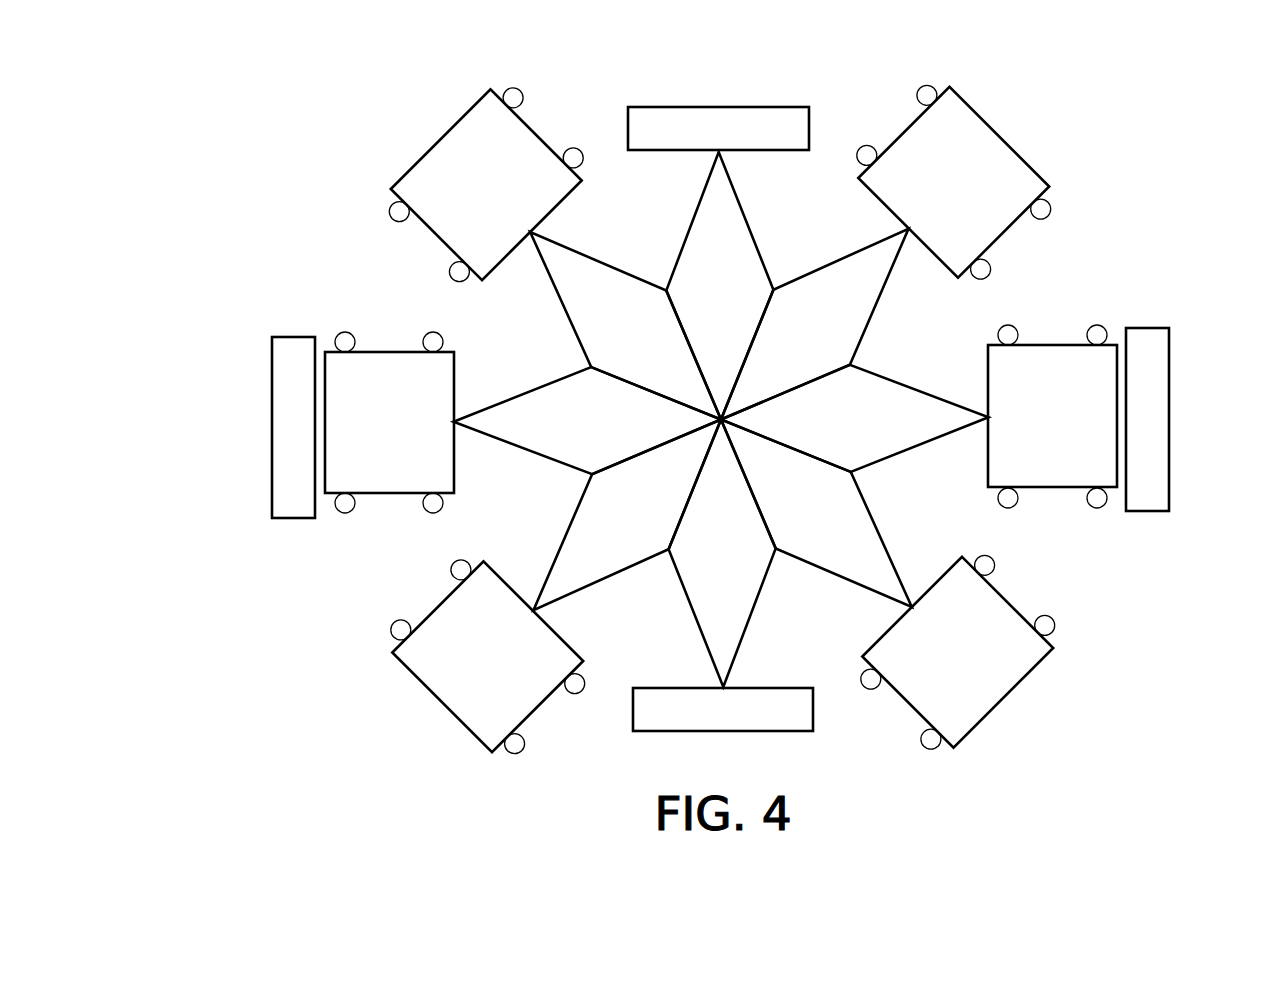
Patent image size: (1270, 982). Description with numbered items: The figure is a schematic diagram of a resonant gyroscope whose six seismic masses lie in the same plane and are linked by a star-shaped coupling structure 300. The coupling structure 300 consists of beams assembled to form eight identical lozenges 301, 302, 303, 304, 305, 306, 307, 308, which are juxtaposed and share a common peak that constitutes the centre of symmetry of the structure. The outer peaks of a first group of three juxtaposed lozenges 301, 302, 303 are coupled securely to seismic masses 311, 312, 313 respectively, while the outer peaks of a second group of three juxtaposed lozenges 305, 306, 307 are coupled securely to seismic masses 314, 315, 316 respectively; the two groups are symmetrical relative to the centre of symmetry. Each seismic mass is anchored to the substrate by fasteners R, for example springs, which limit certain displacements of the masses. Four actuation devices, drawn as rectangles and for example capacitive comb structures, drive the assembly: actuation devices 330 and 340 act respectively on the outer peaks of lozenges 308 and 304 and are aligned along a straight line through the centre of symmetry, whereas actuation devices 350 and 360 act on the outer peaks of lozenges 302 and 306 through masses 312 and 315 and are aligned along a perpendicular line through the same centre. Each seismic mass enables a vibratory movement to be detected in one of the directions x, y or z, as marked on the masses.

The coupling structure 300 is at (538, 366).
The lozenge 301 is at (577, 594).
The lozenge 302 is at (534, 456).
The lozenge 303 is at (573, 248).
The lozenge 304 is at (697, 206).
The lozenge 305 is at (828, 262).
The lozenge 306 is at (924, 390).
The lozenge 307 is at (835, 578).
The lozenge 308 is at (700, 633).
The seismic mass 311 is at (457, 693).
The seismic mass 312 is at (395, 362).
The seismic mass 313 is at (448, 152).
The seismic mass 314 is at (992, 145).
The seismic mass 315 is at (1050, 480).
The seismic mass 316 is at (990, 690).
The actuation device 330 is at (763, 715).
The actuation device 340 is at (730, 123).
The actuation device 350 is at (288, 440).
The actuation device 360 is at (1153, 433).
The fastener R is at (516, 96).